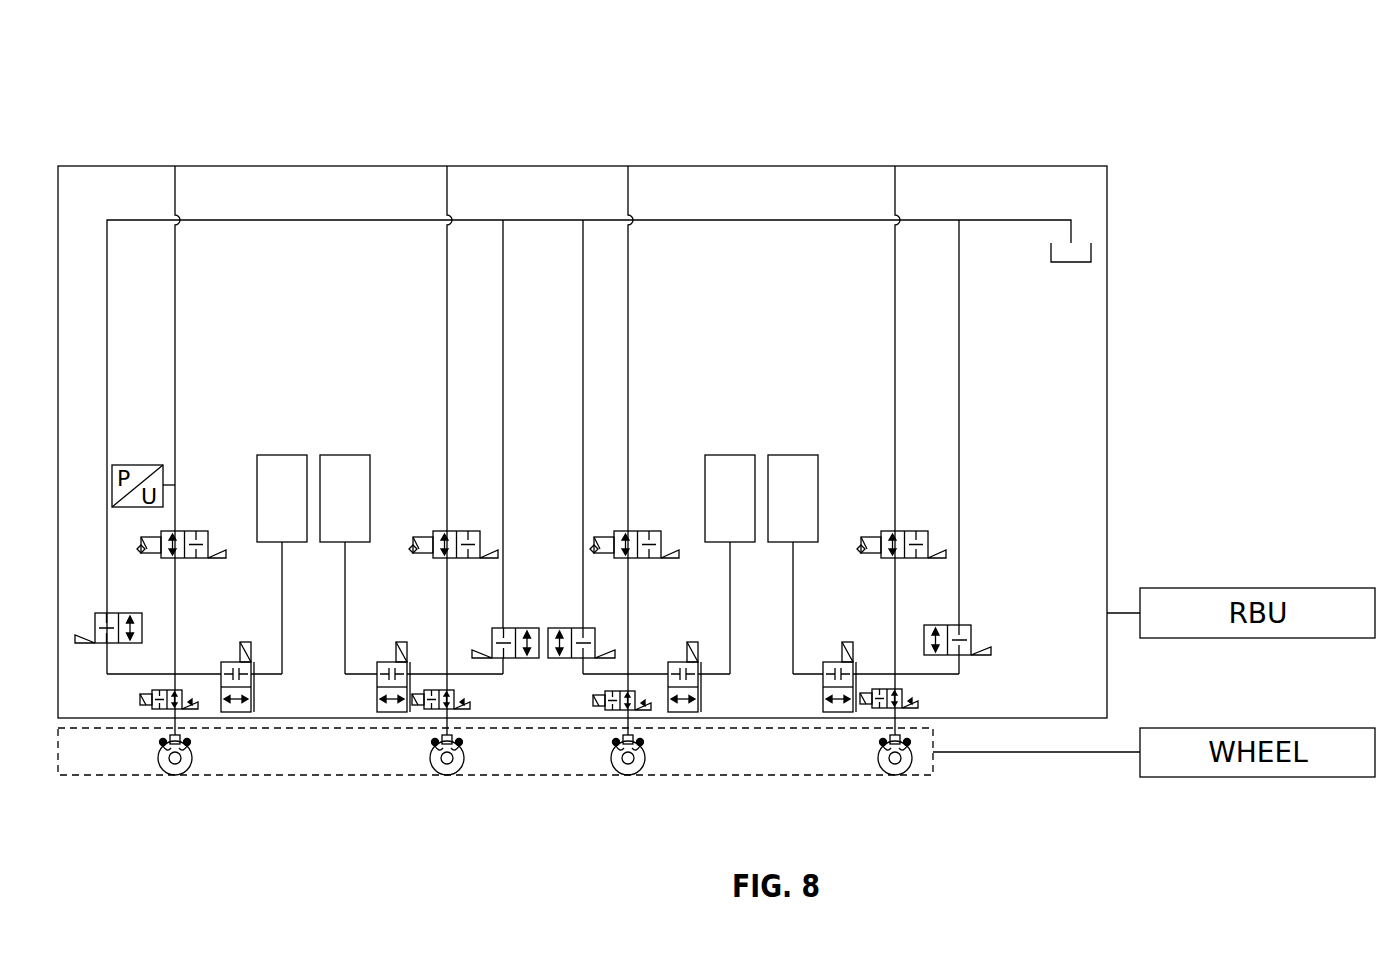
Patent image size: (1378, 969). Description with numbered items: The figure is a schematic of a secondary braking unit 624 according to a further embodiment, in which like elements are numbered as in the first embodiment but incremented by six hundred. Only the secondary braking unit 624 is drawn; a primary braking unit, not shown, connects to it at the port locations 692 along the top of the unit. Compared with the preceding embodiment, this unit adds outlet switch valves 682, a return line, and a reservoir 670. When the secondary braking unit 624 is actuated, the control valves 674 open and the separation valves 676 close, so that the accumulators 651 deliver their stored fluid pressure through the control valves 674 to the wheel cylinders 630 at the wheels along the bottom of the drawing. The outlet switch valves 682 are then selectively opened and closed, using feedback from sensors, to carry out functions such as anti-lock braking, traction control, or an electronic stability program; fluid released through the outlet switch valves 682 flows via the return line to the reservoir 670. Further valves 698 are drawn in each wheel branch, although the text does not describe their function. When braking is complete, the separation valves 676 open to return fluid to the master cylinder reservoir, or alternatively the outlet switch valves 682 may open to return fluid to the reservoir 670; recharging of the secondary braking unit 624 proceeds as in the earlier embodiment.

The secondary braking unit 624 is at (1107, 377).
The port locations 692 is at (176, 166).
The reservoir 670 is at (1070, 262).
The accumulators 651 is at (283, 455).
The separation valves 676 is at (186, 531).
The outlet switch valves 682 is at (121, 613).
The release valves 698 is at (152, 697).
The control valves 674 is at (823, 694).
The wheel brakes 630 is at (162, 745).